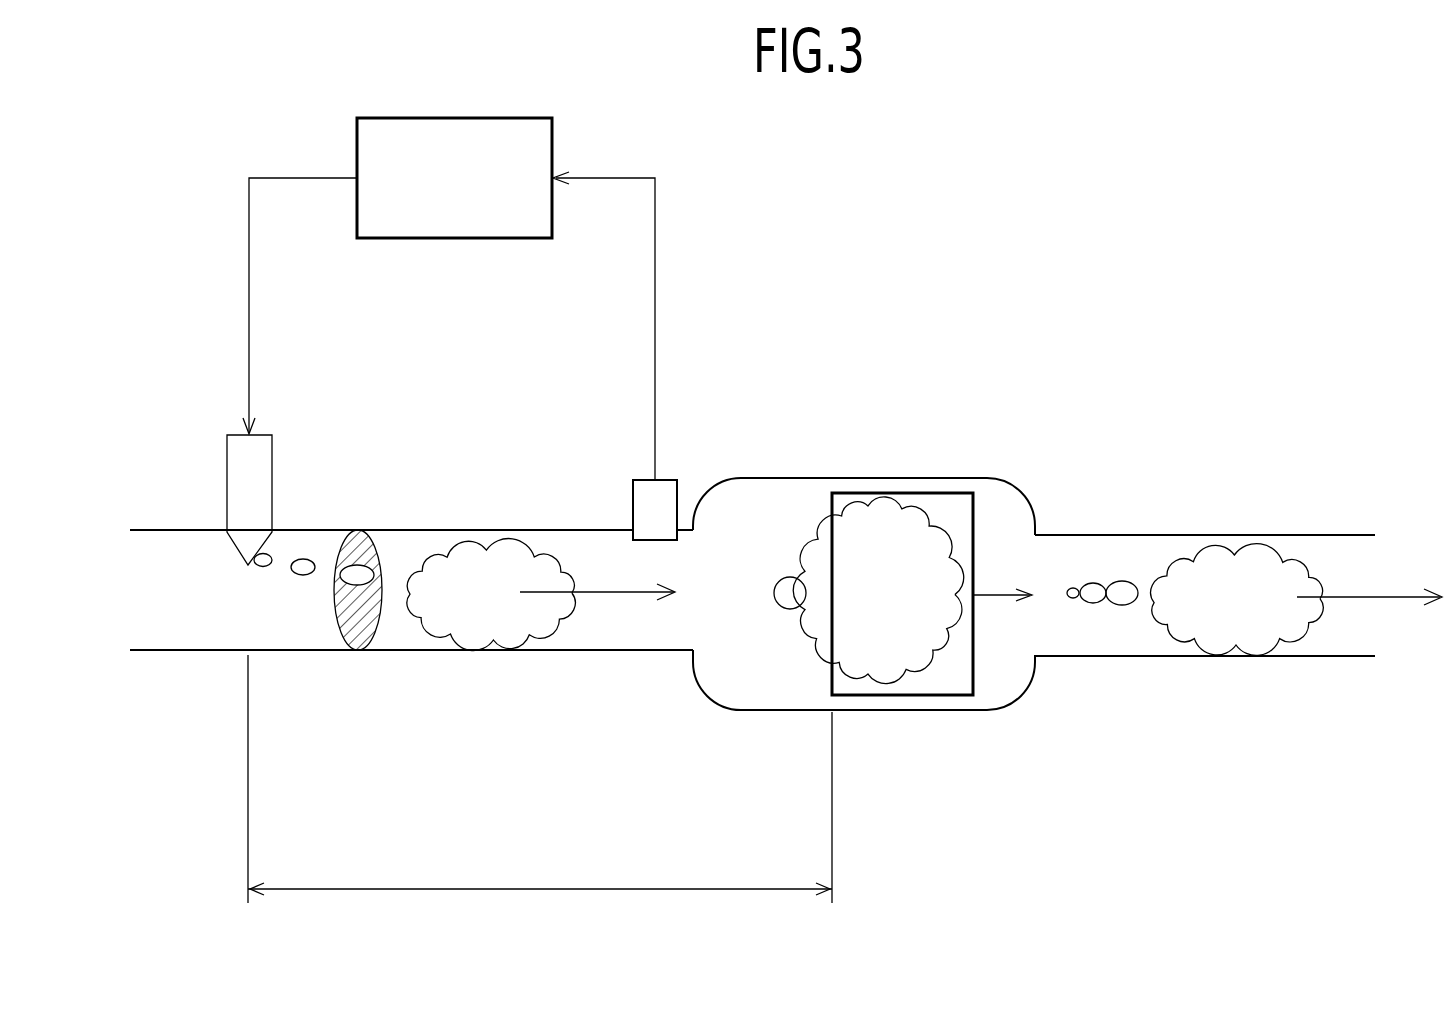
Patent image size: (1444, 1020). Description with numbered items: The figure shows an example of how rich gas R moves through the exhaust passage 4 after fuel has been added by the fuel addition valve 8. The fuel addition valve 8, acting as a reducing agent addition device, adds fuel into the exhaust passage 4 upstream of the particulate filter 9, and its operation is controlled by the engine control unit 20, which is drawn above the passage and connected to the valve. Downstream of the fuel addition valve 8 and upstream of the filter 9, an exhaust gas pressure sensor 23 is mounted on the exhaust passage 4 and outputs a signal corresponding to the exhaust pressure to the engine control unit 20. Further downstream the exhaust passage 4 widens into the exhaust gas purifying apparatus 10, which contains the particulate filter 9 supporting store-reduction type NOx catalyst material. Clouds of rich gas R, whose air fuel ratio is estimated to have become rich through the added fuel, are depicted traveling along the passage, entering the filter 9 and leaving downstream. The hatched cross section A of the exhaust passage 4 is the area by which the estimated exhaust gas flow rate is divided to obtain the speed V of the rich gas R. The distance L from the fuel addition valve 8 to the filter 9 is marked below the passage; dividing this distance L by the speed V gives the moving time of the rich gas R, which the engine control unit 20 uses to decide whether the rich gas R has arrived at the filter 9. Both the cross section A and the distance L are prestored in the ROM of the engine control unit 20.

The engine control unit (ECU) 20 is at (458, 118).
The fuel addition valve 8 is at (272, 470).
The exhaust gas pressure sensor 23 is at (633, 500).
The exhaust passage 4 is at (650, 651).
The exhaust gas purifying apparatus 10 is at (787, 709).
The particulate filter 9 is at (930, 697).
The rich gas R is at (560, 651).
The cross section of the exhaust passage A is at (356, 651).
The speed of the rich gas V is at (600, 612).
The distance of the exhaust passage from the fuel addition valve to the filter L is at (540, 779).